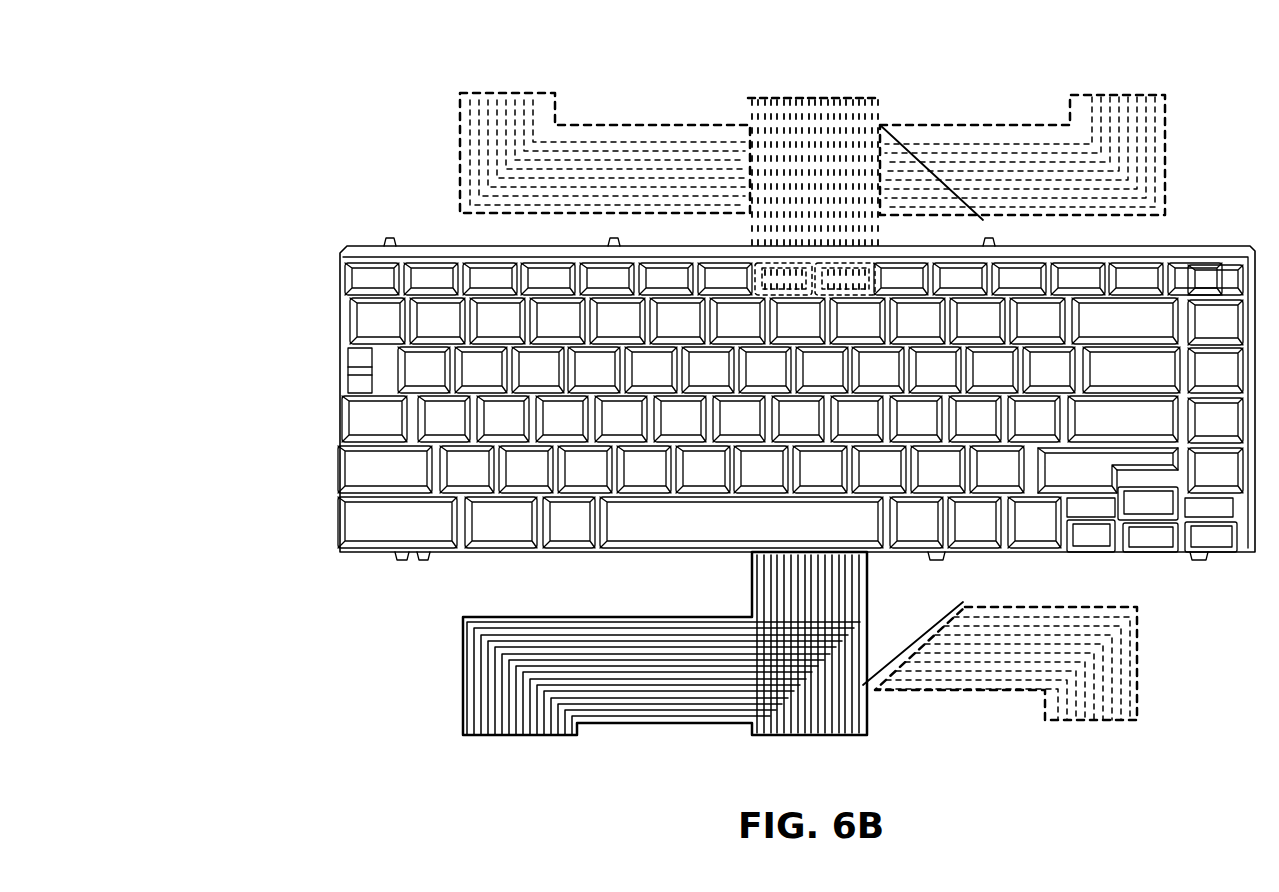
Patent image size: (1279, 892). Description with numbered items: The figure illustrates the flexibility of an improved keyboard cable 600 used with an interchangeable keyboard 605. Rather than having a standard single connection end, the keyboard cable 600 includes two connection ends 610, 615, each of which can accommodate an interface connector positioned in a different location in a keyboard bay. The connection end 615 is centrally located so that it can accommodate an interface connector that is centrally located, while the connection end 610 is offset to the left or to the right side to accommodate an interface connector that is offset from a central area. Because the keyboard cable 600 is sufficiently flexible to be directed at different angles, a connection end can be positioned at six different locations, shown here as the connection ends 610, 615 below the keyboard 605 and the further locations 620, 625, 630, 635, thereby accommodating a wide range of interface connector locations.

The keyboard cable 600 is at (862, 570).
The interchangeable keyboard 605 is at (306, 363).
The connection end 610 is at (508, 730).
The connection end 615 is at (800, 729).
The location 620 is at (1083, 729).
The location 625 is at (507, 84).
The location 630 is at (776, 84).
The location 635 is at (1079, 84).